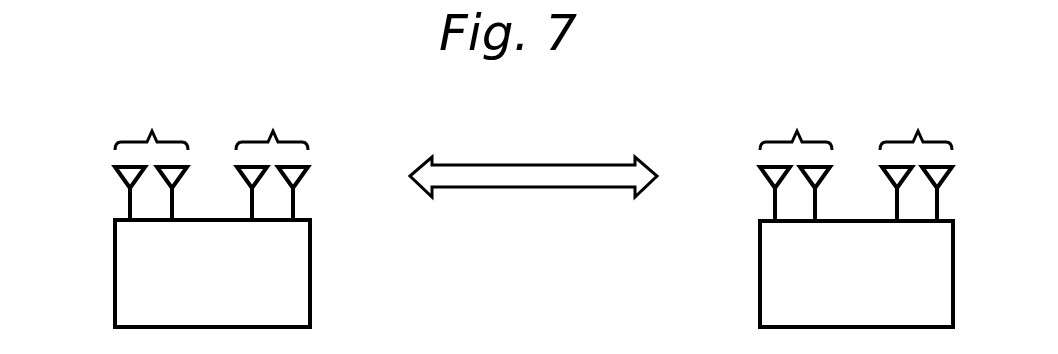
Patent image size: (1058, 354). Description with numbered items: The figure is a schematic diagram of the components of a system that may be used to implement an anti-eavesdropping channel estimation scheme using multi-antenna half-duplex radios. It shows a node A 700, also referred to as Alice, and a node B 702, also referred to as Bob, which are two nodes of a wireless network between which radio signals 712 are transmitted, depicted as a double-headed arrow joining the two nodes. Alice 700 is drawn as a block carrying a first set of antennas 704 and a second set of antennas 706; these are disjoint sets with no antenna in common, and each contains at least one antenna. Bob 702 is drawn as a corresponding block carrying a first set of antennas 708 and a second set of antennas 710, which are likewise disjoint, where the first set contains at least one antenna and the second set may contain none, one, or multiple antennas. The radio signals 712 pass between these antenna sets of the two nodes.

The node A 700 is at (184, 315).
The node B 702 is at (829, 315).
The first set of antennas A1 704 is at (148, 88).
The second set of antennas A2 706 is at (268, 88).
The first set of antennas B1 708 is at (790, 88).
The second set of antennas B2 710 is at (908, 88).
The radio signals 712 is at (527, 187).